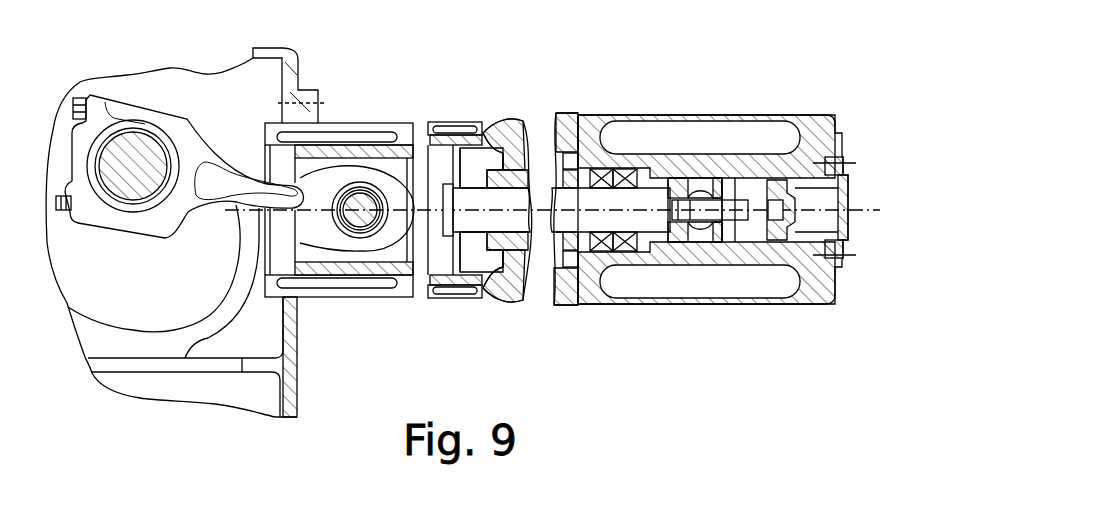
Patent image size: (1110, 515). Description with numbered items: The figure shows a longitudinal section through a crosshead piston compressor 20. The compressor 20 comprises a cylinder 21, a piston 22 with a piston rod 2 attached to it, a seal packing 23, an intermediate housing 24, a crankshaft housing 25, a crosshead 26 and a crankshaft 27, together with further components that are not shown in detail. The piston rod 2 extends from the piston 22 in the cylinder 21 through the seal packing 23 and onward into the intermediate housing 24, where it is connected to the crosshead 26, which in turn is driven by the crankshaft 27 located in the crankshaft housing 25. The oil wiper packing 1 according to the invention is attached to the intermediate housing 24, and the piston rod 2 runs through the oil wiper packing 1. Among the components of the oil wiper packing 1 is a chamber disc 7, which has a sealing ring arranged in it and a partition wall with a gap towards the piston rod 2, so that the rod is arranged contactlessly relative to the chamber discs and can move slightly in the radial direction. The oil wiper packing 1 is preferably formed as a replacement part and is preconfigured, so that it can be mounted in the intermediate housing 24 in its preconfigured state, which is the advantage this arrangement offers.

The oil wiper packing 1 is at (532, 117).
The piston rod 2 is at (470, 238).
The chamber disc 7 is at (510, 292).
The crosshead piston compressor 20 is at (705, 208).
The cylinder 21 is at (722, 258).
The piston 22 is at (727, 178).
The seal packing 23 is at (613, 169).
The intermediate housing 24 is at (568, 305).
The crankshaft housing 25 is at (447, 117).
The crosshead 26 is at (360, 215).
The crankshaft 27 is at (148, 132).